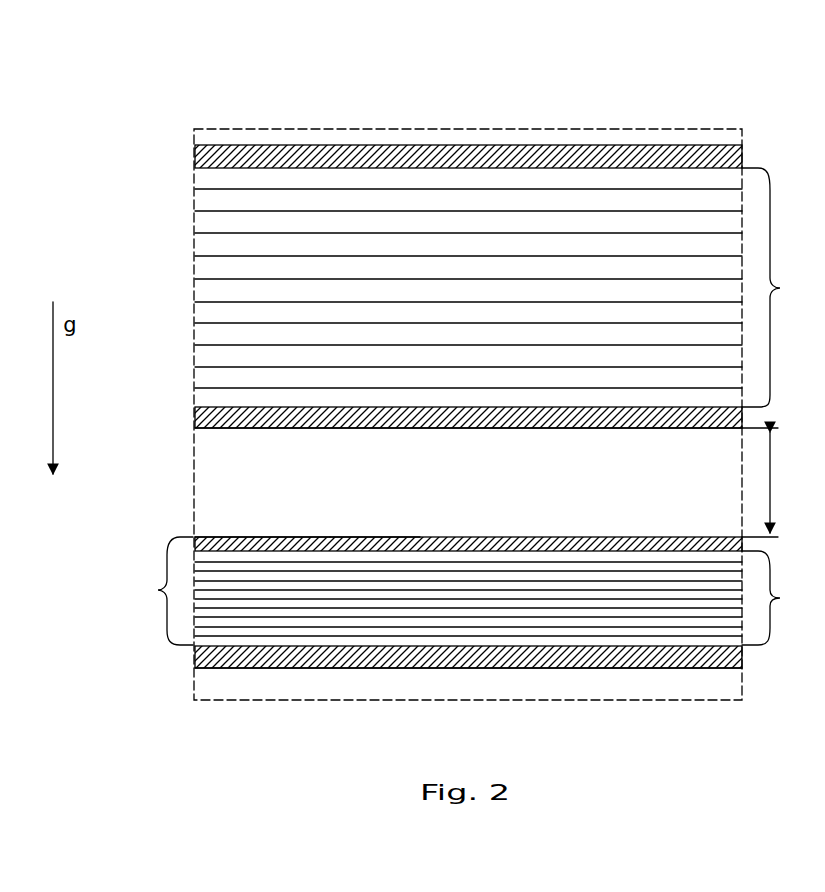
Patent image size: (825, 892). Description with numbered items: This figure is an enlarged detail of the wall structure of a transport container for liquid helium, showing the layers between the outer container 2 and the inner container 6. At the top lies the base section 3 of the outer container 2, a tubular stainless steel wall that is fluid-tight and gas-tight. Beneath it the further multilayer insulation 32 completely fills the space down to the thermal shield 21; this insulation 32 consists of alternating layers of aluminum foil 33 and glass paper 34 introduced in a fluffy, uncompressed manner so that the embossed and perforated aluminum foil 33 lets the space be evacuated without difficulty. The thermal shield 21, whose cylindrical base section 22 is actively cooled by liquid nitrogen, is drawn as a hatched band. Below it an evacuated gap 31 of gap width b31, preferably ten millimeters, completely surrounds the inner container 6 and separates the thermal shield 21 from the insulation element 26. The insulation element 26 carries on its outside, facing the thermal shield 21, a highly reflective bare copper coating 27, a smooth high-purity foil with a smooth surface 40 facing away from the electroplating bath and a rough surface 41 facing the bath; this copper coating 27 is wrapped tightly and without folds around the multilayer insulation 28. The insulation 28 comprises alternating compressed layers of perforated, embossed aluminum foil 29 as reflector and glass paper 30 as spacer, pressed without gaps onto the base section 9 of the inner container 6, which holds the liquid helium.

The outer container 2 is at (490, 124).
The base section 3 is at (677, 148).
The aluminum foil 33 is at (205, 189).
The glass paper 34 is at (262, 211).
The further multilayer insulation 32 is at (779, 287).
The base section 22 is at (563, 428).
The thermal shield 21 is at (481, 433).
The gap 31 is at (677, 496).
The gap width b31 is at (782, 482).
The copper coating 27 is at (536, 533).
The smooth surface 40 is at (300, 537).
The rough surface 41 is at (352, 537).
The insulation element 26 is at (158, 591).
The multilayer insulation 28 is at (777, 598).
The aluminum foil 29 is at (205, 636).
The glass paper 30 is at (232, 627).
The inner container 6 is at (601, 673).
The base section 9 is at (645, 668).